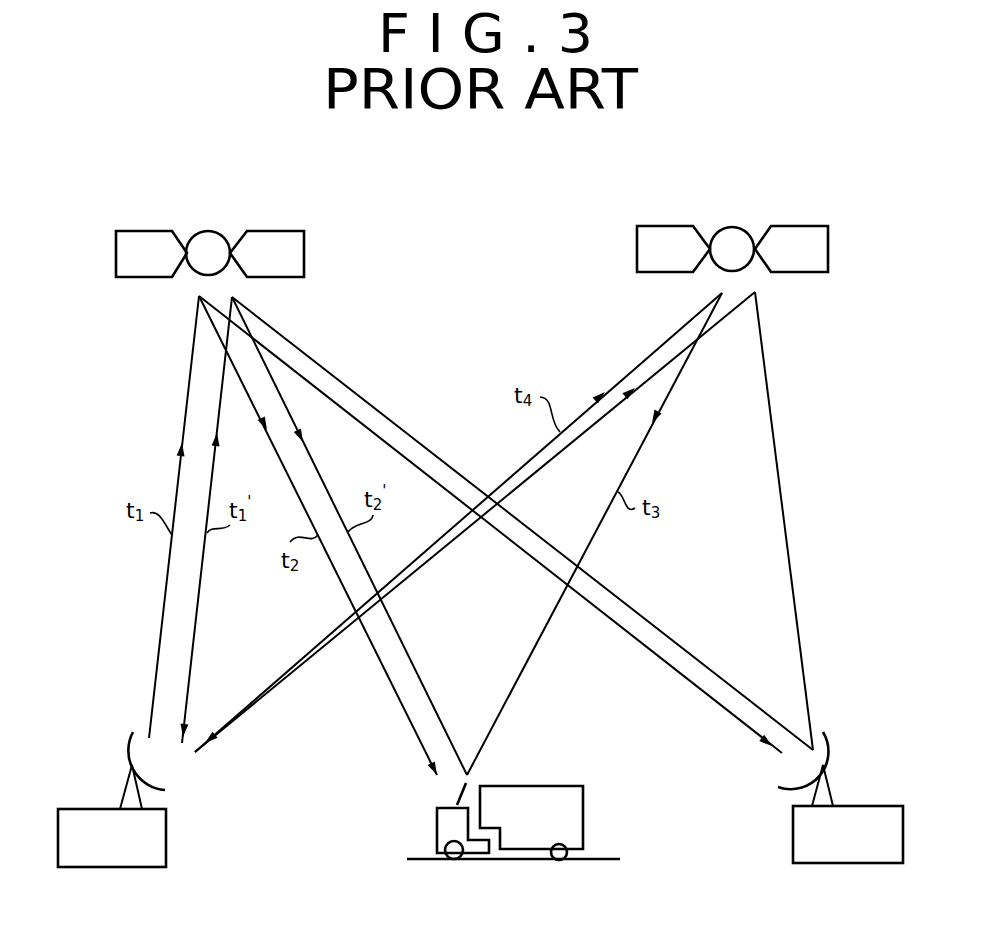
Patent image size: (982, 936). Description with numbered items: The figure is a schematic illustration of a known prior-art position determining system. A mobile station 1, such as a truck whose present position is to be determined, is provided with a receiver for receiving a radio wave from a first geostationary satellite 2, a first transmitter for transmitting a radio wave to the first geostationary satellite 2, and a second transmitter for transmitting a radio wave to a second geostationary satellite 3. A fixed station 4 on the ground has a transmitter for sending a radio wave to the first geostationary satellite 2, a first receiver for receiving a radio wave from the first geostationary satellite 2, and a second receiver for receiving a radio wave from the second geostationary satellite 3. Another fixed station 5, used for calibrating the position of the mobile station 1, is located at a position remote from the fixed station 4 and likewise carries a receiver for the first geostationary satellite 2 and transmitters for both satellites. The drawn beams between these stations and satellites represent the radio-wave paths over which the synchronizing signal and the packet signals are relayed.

The mobile station 1 is at (585, 826).
The first geostationary satellite 2 is at (270, 231).
The second geostationary satellite 3 is at (793, 226).
The fixed station 4 is at (110, 868).
The position calibrating fixed station 5 is at (850, 864).